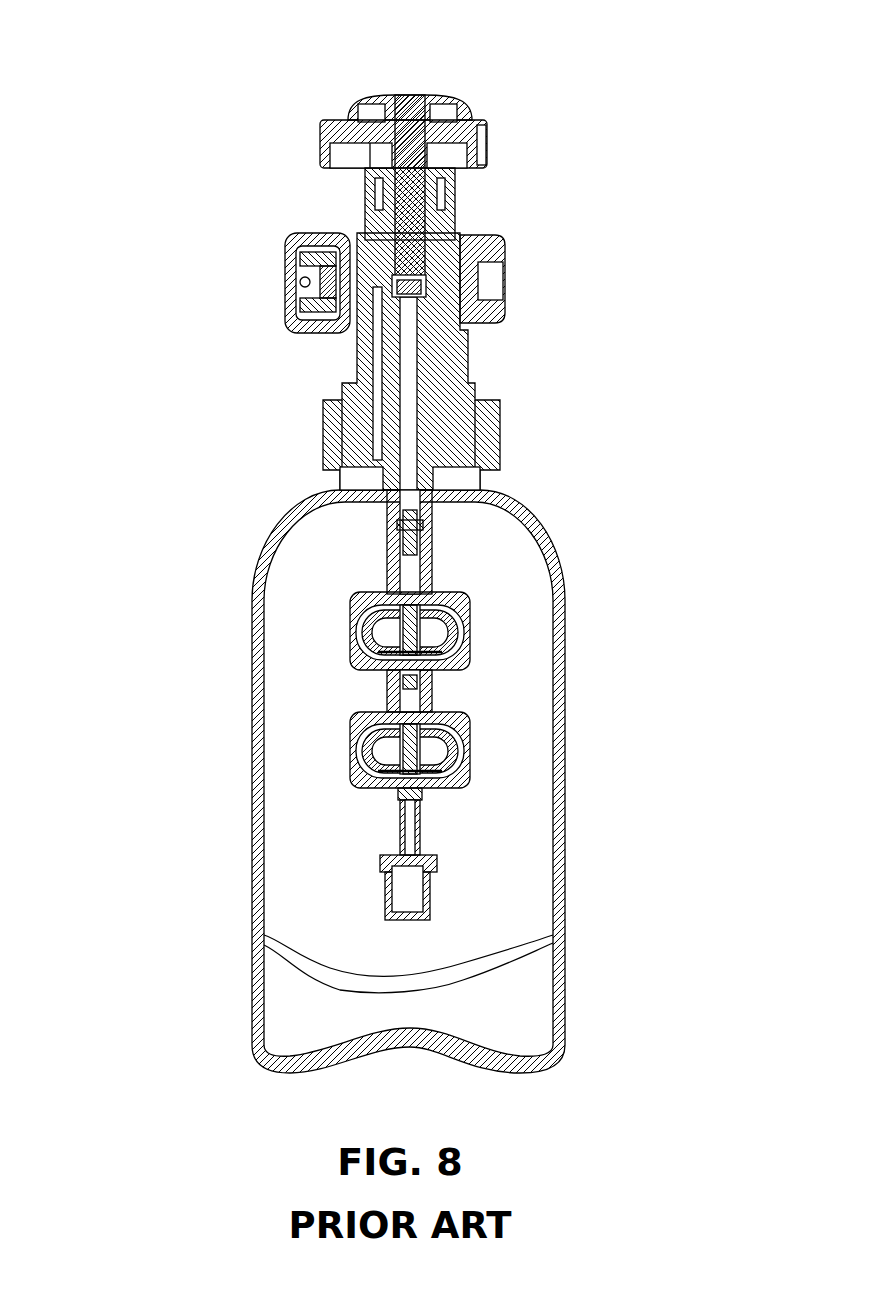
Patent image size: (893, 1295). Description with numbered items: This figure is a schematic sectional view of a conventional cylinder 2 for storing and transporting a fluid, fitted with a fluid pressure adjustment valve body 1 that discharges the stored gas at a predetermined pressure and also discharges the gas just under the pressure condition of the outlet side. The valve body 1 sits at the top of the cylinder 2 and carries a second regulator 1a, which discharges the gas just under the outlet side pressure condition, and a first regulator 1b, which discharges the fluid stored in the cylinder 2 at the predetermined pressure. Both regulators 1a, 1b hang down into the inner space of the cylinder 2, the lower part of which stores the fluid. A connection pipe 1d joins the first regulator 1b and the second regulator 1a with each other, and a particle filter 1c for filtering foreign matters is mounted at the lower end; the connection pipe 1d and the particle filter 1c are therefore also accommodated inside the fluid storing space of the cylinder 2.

The fluid pressure adjustment valve body 1 is at (268, 160).
The second regulator 1a is at (465, 595).
The first regulator 1b is at (465, 740).
The particle filter 1c is at (432, 890).
The connection pipe 1d is at (433, 693).
The cylinder 2 is at (255, 552).